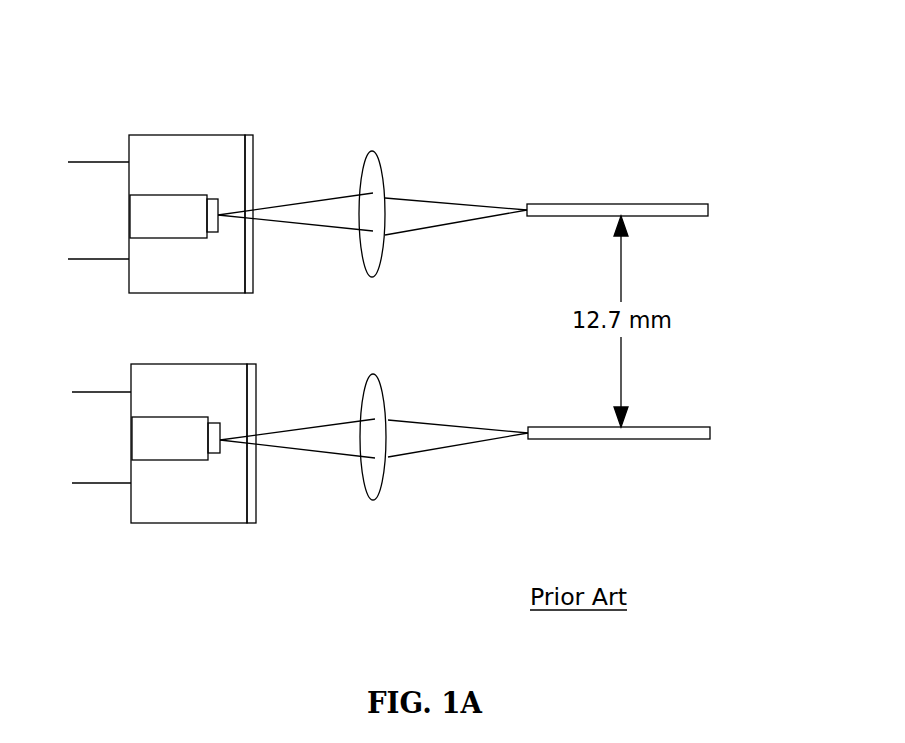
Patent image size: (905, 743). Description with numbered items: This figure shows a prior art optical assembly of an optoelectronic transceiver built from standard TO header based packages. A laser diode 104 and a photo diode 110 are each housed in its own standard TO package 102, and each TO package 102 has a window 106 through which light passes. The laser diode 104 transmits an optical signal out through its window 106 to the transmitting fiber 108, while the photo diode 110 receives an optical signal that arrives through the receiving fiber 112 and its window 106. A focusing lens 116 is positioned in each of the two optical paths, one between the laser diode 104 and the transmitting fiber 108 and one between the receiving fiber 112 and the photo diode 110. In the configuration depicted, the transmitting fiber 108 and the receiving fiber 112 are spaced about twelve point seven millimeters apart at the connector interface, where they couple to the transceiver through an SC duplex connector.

The TO package 102 is at (101, 628).
The laser diode 104 is at (210, 197).
The window 106 is at (250, 135).
The transmitting fiber 108 is at (575, 204).
The photo diode 110 is at (217, 453).
The receiving fiber 112 is at (577, 439).
The focusing lens 116 is at (401, 354).